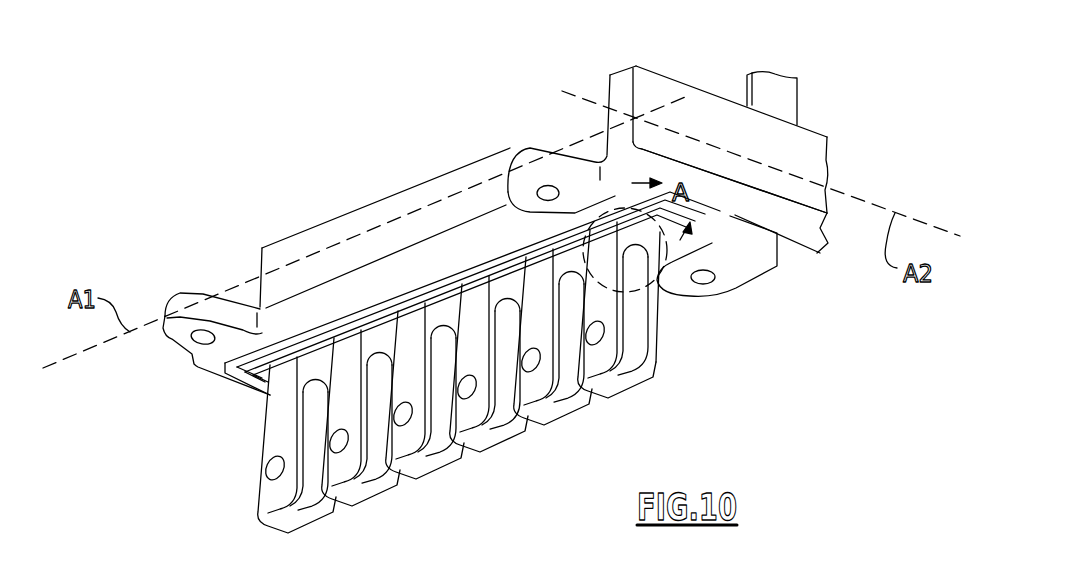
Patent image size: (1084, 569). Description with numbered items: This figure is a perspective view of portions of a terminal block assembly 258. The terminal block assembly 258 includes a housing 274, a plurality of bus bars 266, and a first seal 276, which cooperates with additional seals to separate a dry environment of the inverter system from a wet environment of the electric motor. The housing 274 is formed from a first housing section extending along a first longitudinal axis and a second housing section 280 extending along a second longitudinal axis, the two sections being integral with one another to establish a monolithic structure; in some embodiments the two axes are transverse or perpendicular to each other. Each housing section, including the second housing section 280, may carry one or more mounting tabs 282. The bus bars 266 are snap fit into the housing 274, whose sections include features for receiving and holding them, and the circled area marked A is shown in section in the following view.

The terminal block assembly 258 is at (617, 86).
The bus bars 266 is at (350, 347).
The housing 274 is at (707, 76).
The first seal 276 is at (427, 277).
The second housing section 280 is at (800, 137).
The mounting tabs 282 is at (173, 343).